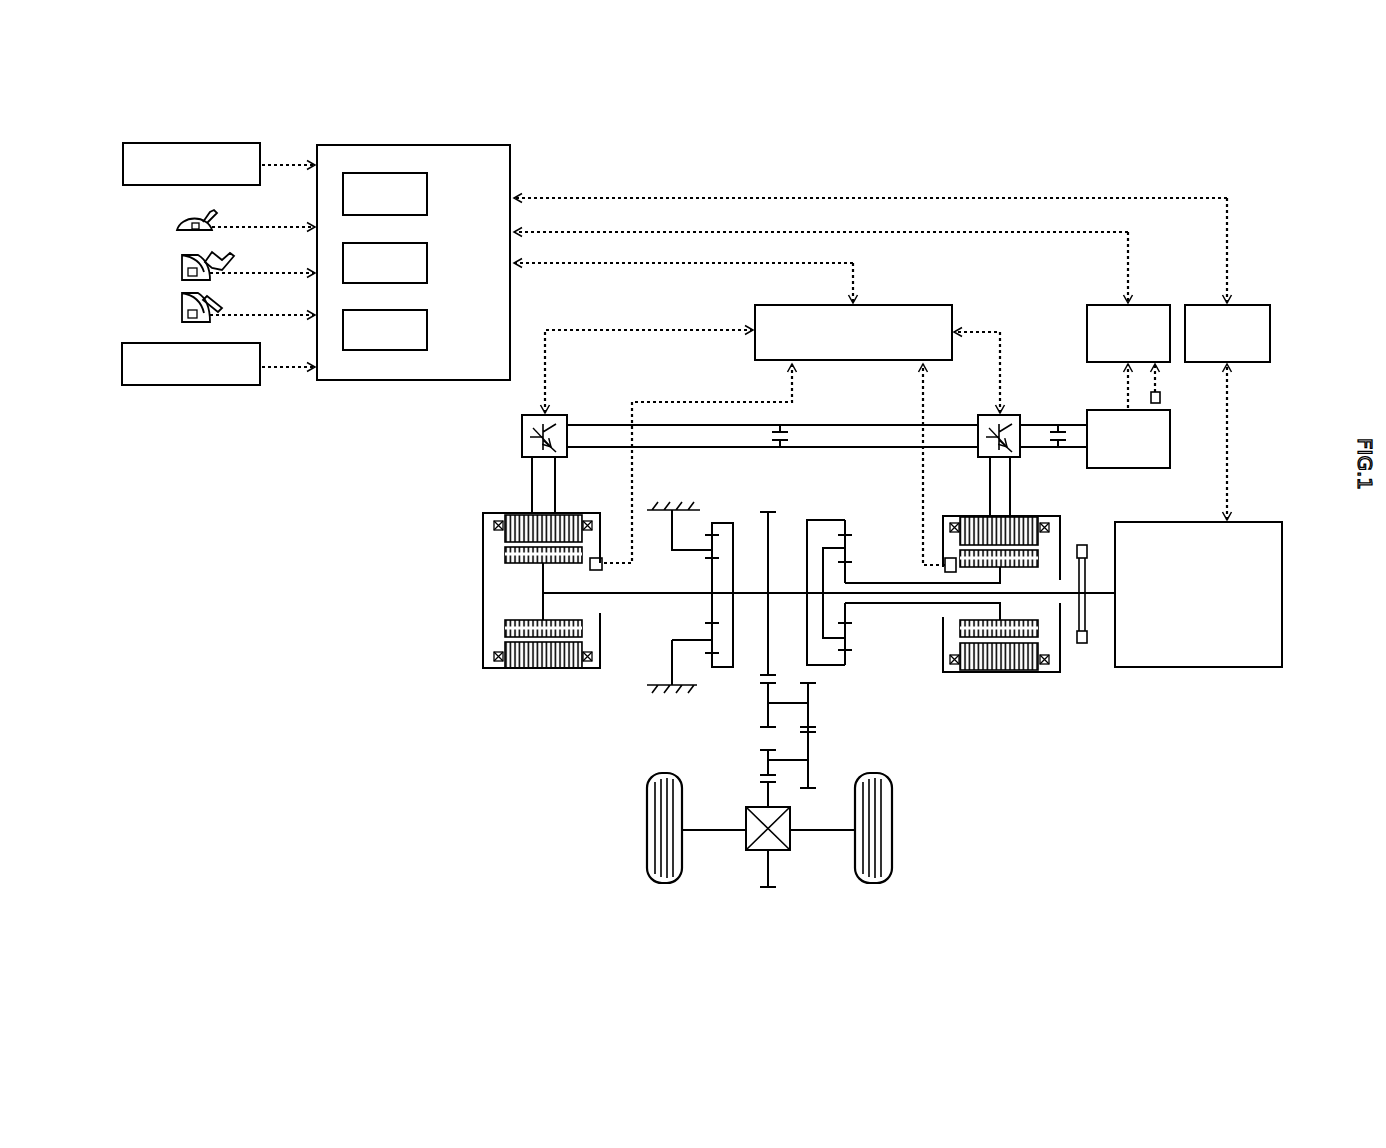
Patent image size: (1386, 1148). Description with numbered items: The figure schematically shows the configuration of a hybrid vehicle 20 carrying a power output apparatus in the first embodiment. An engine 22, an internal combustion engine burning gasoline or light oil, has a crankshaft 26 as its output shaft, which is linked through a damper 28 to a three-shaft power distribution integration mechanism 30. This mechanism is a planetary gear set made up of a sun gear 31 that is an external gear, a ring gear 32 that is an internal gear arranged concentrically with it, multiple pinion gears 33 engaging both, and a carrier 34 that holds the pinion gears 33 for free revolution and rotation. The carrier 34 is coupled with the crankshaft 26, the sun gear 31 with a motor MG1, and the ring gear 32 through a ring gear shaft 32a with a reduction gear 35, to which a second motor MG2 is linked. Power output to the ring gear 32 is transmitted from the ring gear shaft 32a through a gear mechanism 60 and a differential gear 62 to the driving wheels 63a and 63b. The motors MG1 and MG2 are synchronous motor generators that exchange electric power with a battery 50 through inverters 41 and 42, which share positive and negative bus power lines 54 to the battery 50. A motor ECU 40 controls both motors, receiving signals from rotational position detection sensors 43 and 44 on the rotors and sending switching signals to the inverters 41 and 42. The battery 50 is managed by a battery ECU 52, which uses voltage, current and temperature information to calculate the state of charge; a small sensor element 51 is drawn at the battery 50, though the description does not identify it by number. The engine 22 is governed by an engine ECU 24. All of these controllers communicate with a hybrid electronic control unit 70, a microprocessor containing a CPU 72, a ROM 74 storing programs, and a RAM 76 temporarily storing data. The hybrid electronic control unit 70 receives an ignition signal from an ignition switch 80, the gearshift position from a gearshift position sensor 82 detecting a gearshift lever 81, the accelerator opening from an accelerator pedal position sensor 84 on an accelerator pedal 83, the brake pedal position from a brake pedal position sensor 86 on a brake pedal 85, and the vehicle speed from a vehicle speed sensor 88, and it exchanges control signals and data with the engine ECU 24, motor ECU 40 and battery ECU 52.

The hybrid vehicle 20 is at (1034, 173).
The engine 22 is at (1282, 560).
The engine ECU 24 is at (1247, 305).
The crankshaft 26 is at (1098, 598).
The damper 28 is at (1085, 645).
The power distribution integration mechanism 30 is at (903, 577).
The sun gear 31 is at (848, 609).
The ring gear 32 is at (846, 658).
The ring gear shaft 32a is at (753, 593).
The pinion gears 33 is at (848, 634).
The carrier 34 is at (821, 560).
The reduction gear 35 is at (718, 500).
The motor ECU 40 is at (896, 305).
The inverter 41 is at (1020, 414).
The inverter 42 is at (559, 413).
The rotational position detection sensor 43 is at (946, 558).
The rotational position detection sensor 44 is at (596, 556).
The battery 50 is at (1126, 470).
The temperature sensor 51 is at (1160, 404).
The battery ECU 52 is at (1102, 305).
The power lines 54 is at (836, 446).
The gear mechanism 60 is at (850, 744).
The differential gear 62 is at (790, 842).
The driving wheel 63a is at (647, 863).
The driving wheel 63b is at (892, 863).
The hybrid electronic control unit 70 is at (413, 145).
The CPU 72 is at (428, 197).
The ROM 74 is at (428, 266).
The RAM 76 is at (428, 333).
The ignition switch 80 is at (123, 160).
The gearshift lever 81 is at (208, 212).
The gearshift position sensor 82 is at (178, 229).
The accelerator pedal 83 is at (207, 260).
The accelerator pedal position sensor 84 is at (182, 273).
The brake pedal 85 is at (205, 300).
The brake pedal position sensor 86 is at (182, 316).
The vehicle speed sensor 88 is at (122, 358).
The motor MG1 is at (1007, 672).
The motor MG2 is at (521, 513).